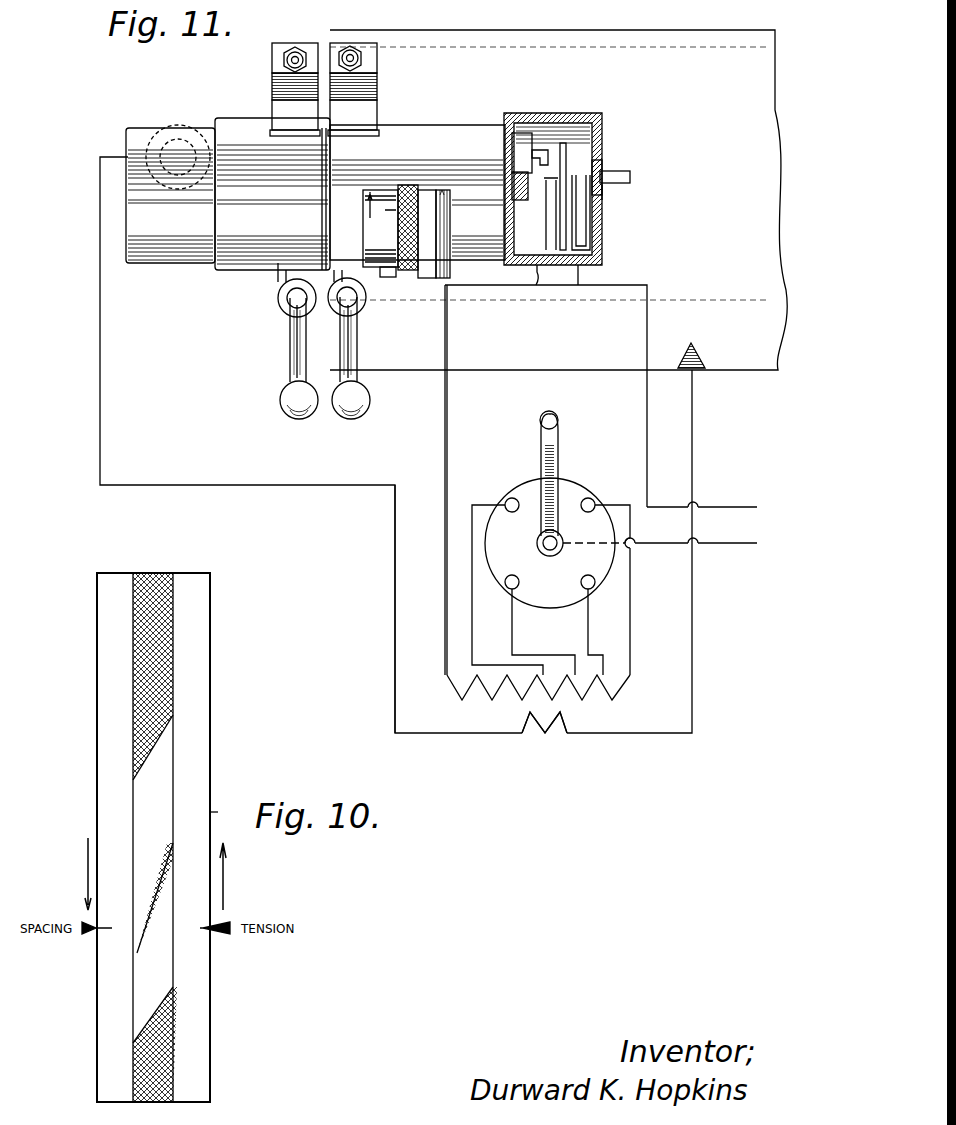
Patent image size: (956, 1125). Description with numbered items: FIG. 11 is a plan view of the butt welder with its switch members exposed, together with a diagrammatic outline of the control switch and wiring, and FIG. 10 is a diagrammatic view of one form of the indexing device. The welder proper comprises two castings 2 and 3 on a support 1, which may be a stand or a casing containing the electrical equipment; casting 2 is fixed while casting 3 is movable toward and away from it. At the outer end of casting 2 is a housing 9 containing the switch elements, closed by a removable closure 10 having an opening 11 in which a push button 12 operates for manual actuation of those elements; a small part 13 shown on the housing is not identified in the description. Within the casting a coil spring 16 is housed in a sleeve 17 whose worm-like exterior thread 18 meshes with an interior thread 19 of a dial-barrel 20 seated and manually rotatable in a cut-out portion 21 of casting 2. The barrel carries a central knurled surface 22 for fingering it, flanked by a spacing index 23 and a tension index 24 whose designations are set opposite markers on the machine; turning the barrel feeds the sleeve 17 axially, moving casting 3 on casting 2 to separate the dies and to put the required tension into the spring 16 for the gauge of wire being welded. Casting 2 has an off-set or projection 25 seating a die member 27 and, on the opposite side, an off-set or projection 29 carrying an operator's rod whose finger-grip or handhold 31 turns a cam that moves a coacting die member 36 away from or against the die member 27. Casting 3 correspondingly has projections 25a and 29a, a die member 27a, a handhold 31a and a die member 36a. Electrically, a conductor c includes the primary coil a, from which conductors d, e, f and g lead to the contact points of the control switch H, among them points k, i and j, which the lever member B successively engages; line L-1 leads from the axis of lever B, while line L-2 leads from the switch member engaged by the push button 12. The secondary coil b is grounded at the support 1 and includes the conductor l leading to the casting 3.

In FIG. 11, the support 1 is at (750, 113).
In FIG. 11, the casting 2 is at (438, 134).
In FIG. 11, the casting 3 is at (215, 128).
In FIG. 11, the housing 9 is at (580, 113).
In FIG. 11, the removable closure 10 is at (592, 170).
In FIG. 11, the opening 11 is at (602, 195).
In FIG. 11, the push button 12 is at (630, 177).
In FIG. 11, the stop 13 is at (553, 123).
In FIG. 11, the coil spring 16 is at (537, 285).
In FIG. 11, the sleeve 17 is at (566, 160).
In FIG. 11, the thread 18 is at (545, 226).
In FIG. 11, the thread 19 is at (588, 235).
In FIG. 11, the dial-barrel 20 is at (386, 278).
In FIG. 10, the dial-barrel 20 is at (225, 812).
In FIG. 11, the cut-out portion 21 is at (438, 276).
In FIG. 11, the knurled surface 22 is at (408, 190).
In FIG. 10, the knurled surface 22 is at (136, 1055).
In FIG. 11, the index 23 is at (388, 210).
In FIG. 10, the index 23 is at (98, 800).
In FIG. 11, the index 24 is at (430, 222).
In FIG. 10, the index 24 is at (200, 742).
In FIG. 11, the off-set or projection 25 is at (357, 113).
In FIG. 11, the off-set or projection 25a is at (284, 113).
In FIG. 11, the die member 27 is at (375, 85).
In FIG. 11, the die member 27a is at (282, 88).
In FIG. 11, the off-set or projection 29 is at (368, 306).
In FIG. 11, the off-set or projection 29a is at (281, 290).
In FIG. 11, the finger-grip or handhold 31 is at (357, 362).
In FIG. 11, the finger-grip or handhold 31a is at (290, 370).
In FIG. 11, the die member 36 is at (365, 55).
In FIG. 11, the die member 36a is at (275, 60).
In FIG. 11, the control switch H is at (550, 543).
In FIG. 11, the lever member B is at (555, 423).
In FIG. 11, the contact point k is at (612, 484).
In FIG. 11, the contact point j is at (518, 586).
In FIG. 11, the contact point i is at (590, 575).
In FIG. 11, the conductor g is at (507, 590).
In FIG. 11, the conductor f is at (512, 620).
In FIG. 11, the conductor e is at (588, 626).
In FIG. 11, the conductor d is at (630, 634).
In FIG. 11, the primary coil a is at (538, 676).
In FIG. 11, the secondary coil b is at (544, 734).
In FIG. 11, the conductor c is at (447, 405).
In FIG. 11, the conductor l is at (402, 635).
In FIG. 11, the line L-1 is at (660, 531).
In FIG. 11, the line L-2 is at (702, 495).